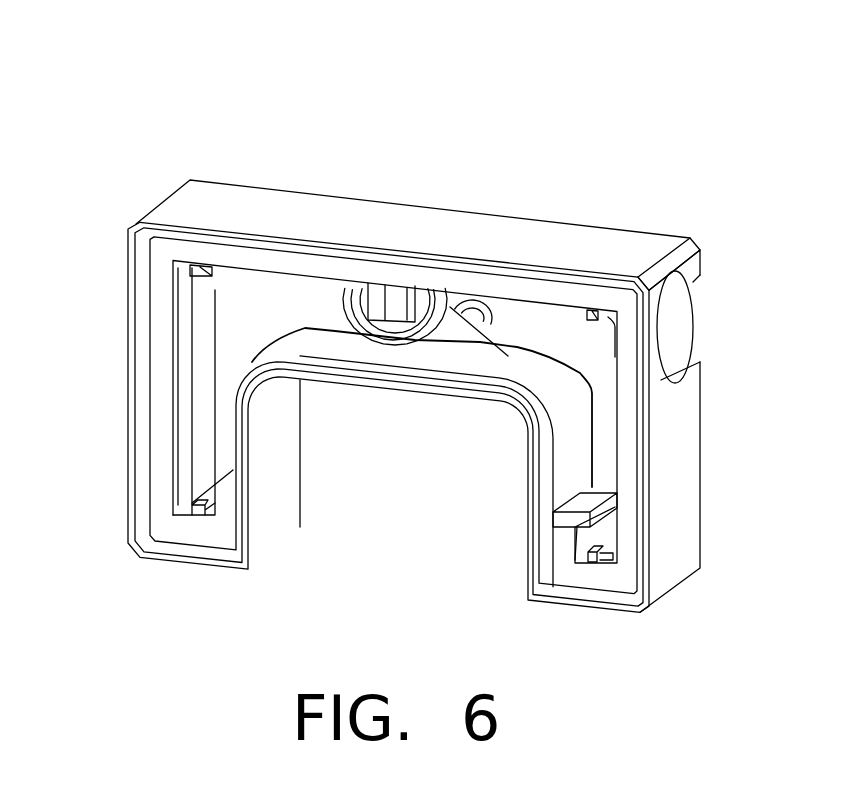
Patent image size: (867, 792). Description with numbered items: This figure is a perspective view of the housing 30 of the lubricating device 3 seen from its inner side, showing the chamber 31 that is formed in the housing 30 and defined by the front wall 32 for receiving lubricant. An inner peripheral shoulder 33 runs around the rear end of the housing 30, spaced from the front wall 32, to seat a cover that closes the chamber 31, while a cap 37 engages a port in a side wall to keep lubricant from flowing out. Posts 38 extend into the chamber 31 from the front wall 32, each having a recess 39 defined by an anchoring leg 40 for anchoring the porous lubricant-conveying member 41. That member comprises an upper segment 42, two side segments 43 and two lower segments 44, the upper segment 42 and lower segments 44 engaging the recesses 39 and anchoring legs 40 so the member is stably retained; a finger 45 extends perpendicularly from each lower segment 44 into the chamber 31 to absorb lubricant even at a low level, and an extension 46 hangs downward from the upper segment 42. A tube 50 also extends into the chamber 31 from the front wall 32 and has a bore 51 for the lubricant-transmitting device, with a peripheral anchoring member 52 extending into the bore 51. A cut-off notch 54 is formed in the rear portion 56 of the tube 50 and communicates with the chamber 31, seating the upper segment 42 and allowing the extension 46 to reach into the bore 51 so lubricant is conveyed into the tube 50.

The lubricating device 3 is at (630, 182).
The housing 30 is at (441, 227).
The chamber 31 is at (273, 300).
The front wall 32 is at (203, 300).
The inner peripheral shoulder 33 is at (142, 487).
The cap 37 is at (680, 318).
The posts 38 is at (610, 553).
The recess 39 is at (593, 310).
The anchoring leg 40 is at (593, 560).
The lubricant-conveying member 41 is at (160, 397).
The upper segment 42 is at (311, 263).
The side segments 43 is at (632, 466).
The lower segments 44 is at (172, 525).
The finger 45 is at (575, 512).
The extension 46 is at (392, 308).
The tube 50 is at (457, 312).
The bore 51 is at (415, 322).
The anchoring member 52 is at (405, 325).
The notch 54 is at (368, 280).
The rear portion 56 is at (363, 327).